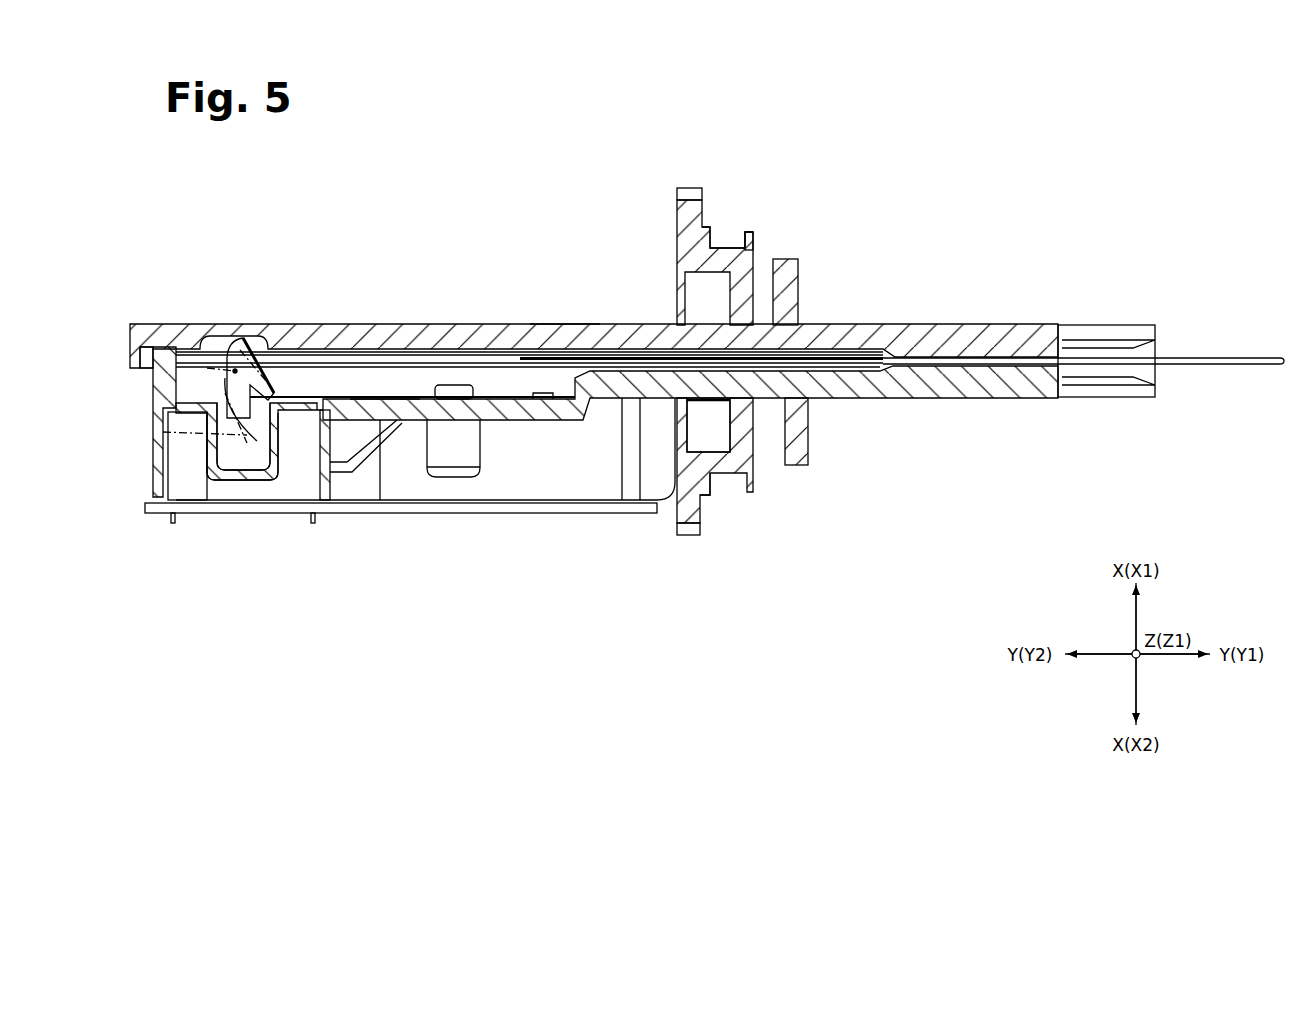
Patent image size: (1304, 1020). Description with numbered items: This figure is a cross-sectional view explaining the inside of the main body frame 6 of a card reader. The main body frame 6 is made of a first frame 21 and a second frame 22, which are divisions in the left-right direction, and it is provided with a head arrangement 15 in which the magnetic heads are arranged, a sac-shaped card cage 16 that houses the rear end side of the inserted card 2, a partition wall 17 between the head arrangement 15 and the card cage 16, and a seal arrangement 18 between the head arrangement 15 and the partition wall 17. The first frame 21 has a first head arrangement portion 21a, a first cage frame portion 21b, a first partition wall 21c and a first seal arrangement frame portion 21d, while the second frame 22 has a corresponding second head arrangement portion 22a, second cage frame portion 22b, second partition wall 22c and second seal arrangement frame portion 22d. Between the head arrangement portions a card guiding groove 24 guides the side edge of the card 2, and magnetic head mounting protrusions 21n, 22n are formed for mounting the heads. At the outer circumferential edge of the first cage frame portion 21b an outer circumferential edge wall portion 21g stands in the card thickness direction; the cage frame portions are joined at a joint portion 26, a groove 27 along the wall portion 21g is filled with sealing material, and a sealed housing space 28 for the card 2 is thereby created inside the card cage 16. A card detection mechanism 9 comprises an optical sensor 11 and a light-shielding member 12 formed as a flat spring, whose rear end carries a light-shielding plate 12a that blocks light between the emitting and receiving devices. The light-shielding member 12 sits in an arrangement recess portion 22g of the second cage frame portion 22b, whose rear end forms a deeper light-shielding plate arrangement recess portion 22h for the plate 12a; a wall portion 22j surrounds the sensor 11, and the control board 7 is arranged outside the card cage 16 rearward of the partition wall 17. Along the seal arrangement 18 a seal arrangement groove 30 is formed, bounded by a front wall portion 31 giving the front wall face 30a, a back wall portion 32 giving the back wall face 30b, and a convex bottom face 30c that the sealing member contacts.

The card 2 is at (1232, 357).
The main body frame 6 is at (951, 196).
The control board 7 is at (470, 514).
The card detection mechanism 9 is at (124, 478).
The optical sensor 11 is at (203, 514).
The light-shielding member 12 is at (330, 400).
The light-shielding plate 12a is at (163, 432).
The head arrangement 15 is at (1018, 277).
The card cage 16 is at (419, 269).
The partition wall 17 is at (678, 208).
The seal arrangement 18 is at (769, 220).
The first frame 21 is at (594, 324).
The first head arrangement portion 21a is at (908, 324).
The first cage frame portion 21b is at (557, 324).
The first partition wall 21c is at (688, 187).
The first seal arrangement frame portion 21d is at (755, 245).
The outer circumferential edge wall portion 21g is at (137, 364).
The magnetic head mounting protrusion 21n is at (799, 265).
The second frame 22 is at (617, 423).
The second head arrangement portion 22a is at (940, 399).
The second cage frame portion 22b is at (540, 421).
The second partition wall 22c is at (690, 536).
The second seal arrangement frame portion 22d is at (763, 462).
The arrangement recess portion 22g is at (385, 399).
The light-shielding plate arrangement recess portion 22h is at (247, 458).
The wall portion 22j is at (340, 490).
The magnetic head mounting protrusion 22n is at (809, 440).
The card guiding groove 24 is at (1153, 378).
The joint portion 26 is at (125, 422).
The groove 27 is at (147, 375).
The sealed housing space 28 is at (497, 355).
The seal arrangement groove 30 is at (744, 492).
The front wall face 30a is at (739, 237).
The back wall face 30b is at (714, 230).
The bottom face 30c is at (708, 425).
The front wall portion 31 is at (754, 492).
The back wall portion 32 is at (708, 496).